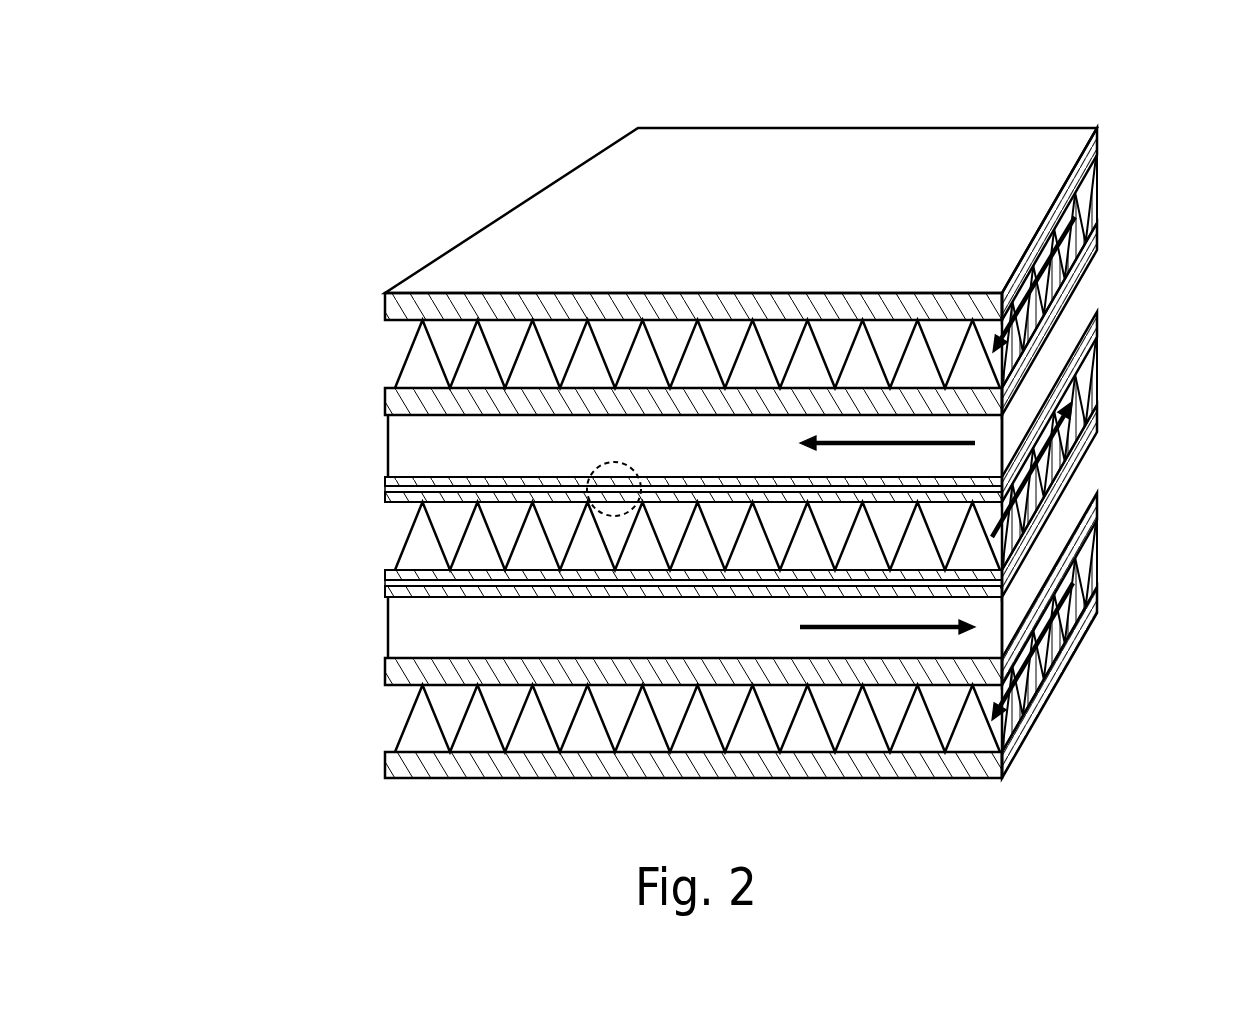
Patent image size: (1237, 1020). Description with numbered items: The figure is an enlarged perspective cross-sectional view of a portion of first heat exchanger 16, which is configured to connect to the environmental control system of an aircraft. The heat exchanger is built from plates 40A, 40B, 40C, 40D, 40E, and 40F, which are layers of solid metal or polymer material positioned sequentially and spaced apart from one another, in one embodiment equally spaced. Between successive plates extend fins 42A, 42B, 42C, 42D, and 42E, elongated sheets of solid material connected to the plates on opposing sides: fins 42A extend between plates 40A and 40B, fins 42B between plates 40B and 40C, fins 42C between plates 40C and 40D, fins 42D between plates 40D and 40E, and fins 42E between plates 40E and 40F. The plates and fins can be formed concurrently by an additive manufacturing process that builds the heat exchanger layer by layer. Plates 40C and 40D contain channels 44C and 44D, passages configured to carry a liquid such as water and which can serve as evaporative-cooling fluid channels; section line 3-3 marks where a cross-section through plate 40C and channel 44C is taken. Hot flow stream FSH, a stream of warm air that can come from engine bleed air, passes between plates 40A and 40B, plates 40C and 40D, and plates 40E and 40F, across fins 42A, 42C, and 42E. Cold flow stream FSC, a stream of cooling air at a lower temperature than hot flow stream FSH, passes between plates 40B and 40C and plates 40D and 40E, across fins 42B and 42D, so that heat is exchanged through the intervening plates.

The first heat exchanger 16 is at (1040, 102).
The plate 40A is at (395, 263).
The plate 40B is at (390, 388).
The plate 40C is at (385, 478).
The plate 40D is at (385, 570).
The plate 40E is at (388, 660).
The plate 40F is at (388, 752).
The fins 42A is at (1082, 208).
The fins 42B is at (387, 443).
The fins 42C is at (1082, 398).
The fins 42D is at (387, 625).
The fins 42E is at (1077, 565).
The channel 44C is at (368, 493).
The channel 44D is at (368, 586).
The section line 3-3 is at (612, 462).
The hot flow stream FSH is at (1052, 260).
The cold flow stream FSC is at (1003, 423).